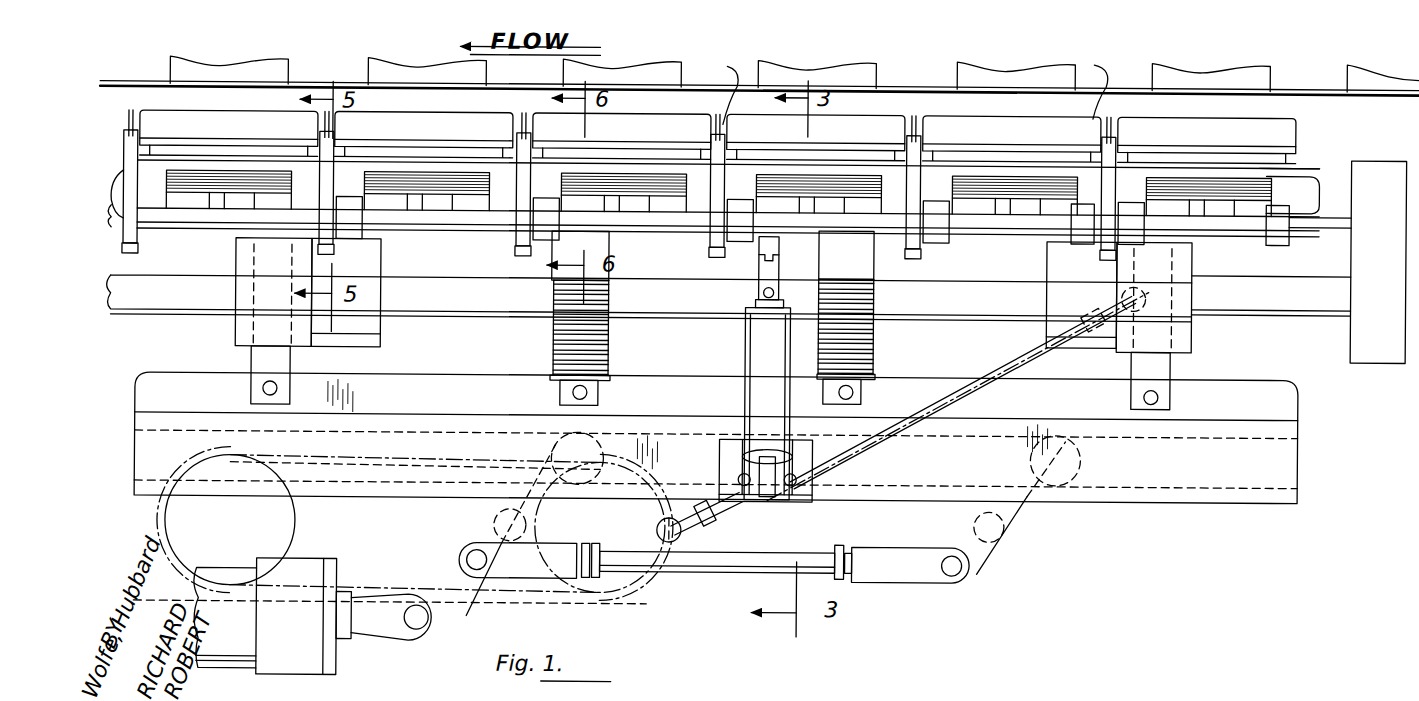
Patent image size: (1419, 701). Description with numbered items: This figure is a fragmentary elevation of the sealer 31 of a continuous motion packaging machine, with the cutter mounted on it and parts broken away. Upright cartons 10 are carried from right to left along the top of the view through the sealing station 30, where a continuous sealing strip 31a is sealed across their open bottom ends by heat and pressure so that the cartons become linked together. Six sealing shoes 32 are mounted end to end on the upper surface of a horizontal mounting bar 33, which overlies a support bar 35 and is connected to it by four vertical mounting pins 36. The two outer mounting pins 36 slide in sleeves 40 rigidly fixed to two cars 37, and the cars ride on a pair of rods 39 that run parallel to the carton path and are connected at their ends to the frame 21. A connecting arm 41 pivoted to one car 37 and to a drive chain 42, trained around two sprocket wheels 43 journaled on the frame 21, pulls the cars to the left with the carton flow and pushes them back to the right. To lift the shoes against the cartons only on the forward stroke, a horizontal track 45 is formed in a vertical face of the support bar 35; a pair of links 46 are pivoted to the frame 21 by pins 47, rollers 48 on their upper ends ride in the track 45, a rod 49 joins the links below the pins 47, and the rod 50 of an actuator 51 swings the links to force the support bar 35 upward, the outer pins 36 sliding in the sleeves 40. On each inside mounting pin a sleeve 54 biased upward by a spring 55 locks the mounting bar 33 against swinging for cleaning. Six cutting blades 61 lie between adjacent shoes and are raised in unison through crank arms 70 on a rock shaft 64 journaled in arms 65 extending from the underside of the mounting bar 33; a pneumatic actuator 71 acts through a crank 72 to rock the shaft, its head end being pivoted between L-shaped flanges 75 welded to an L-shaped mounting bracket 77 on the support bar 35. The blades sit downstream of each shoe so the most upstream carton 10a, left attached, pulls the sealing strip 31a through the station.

The cartons 10 is at (366, 68).
The most upstream carton 10a is at (1276, 60).
The frame 21 is at (1380, 356).
The sealing station 30 is at (1230, 530).
The sealer 31 is at (226, 200).
The sealing strip 31a is at (1280, 95).
The sealing shoes 32 is at (245, 139).
The mounting bar 33 is at (1300, 175).
The support bar 35 is at (1300, 400).
The mounting pins 36 is at (255, 366).
The cars 37 is at (375, 265).
The rods 39 is at (1316, 228).
The sleeves 40 is at (247, 315).
The connecting arm 41 is at (1045, 368).
The drive chain 42 is at (520, 604).
The sprocket wheels 43 is at (298, 520).
The track 45 is at (1280, 490).
The links 46 is at (445, 548).
The pins 47 is at (480, 520).
The rollers 48 is at (556, 428).
The rod 49 is at (715, 570).
The rod of actuator 50 is at (388, 635).
The actuator 51 is at (302, 668).
The sleeve 54 is at (565, 282).
The spring 55 is at (548, 340).
The cutting blades 61 is at (902, 86).
The rock shaft 64 is at (1270, 240).
The arms 65 is at (1070, 240).
The crank arm 70 is at (515, 250).
The pneumatic actuator 71 is at (752, 358).
The crank 72 is at (757, 290).
The L-shaped flanges 75 is at (740, 470).
The L-shaped mounting bracket 77 is at (732, 452).